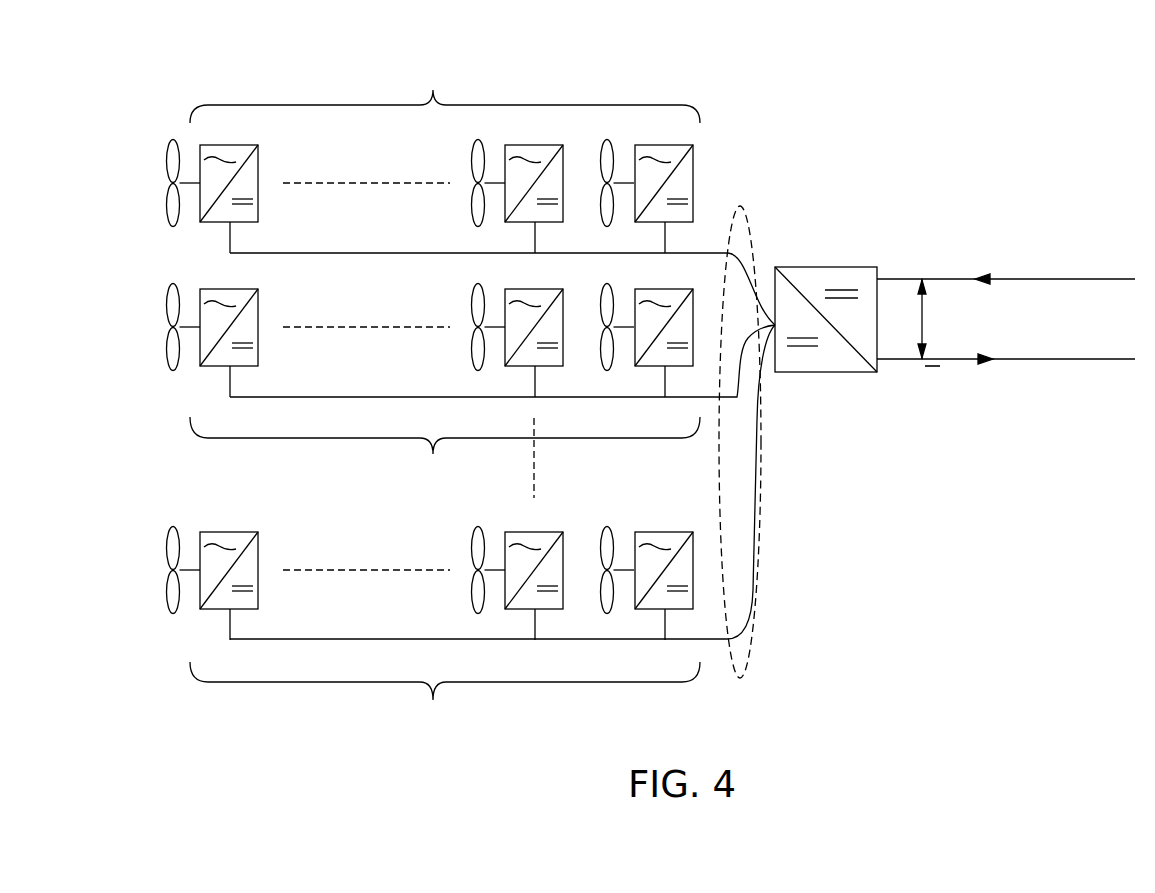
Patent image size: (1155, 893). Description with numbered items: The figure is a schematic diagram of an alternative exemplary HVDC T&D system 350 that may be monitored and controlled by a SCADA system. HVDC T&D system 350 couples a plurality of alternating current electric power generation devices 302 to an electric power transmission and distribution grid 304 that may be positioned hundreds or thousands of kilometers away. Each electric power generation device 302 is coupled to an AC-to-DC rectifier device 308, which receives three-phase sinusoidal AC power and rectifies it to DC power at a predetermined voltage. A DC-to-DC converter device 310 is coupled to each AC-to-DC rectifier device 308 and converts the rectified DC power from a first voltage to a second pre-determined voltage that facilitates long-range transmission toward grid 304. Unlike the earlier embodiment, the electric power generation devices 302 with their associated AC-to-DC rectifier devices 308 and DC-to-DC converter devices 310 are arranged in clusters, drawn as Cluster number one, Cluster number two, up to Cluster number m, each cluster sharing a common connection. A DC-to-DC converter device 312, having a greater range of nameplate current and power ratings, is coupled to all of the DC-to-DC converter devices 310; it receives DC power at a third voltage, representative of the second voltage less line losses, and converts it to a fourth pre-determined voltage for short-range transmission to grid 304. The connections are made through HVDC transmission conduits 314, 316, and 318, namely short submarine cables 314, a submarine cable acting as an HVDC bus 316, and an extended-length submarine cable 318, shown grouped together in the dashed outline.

The HVDC T&D system 350 is at (220, 52).
The electric power generation device 302 is at (165, 153).
The AC-to-DC rectifier device 308 is at (446, 382).
The DC-to-DC converter device 310 is at (258, 152).
The DC-to-DC converter device 312 is at (825, 267).
The HVDC transmission conduit 314 is at (574, 442).
The HVDC transmission conduit 316 is at (574, 442).
The HVDC transmission conduit 318 is at (748, 657).
The electric power transmission and distribution grid 304 is at (1097, 252).